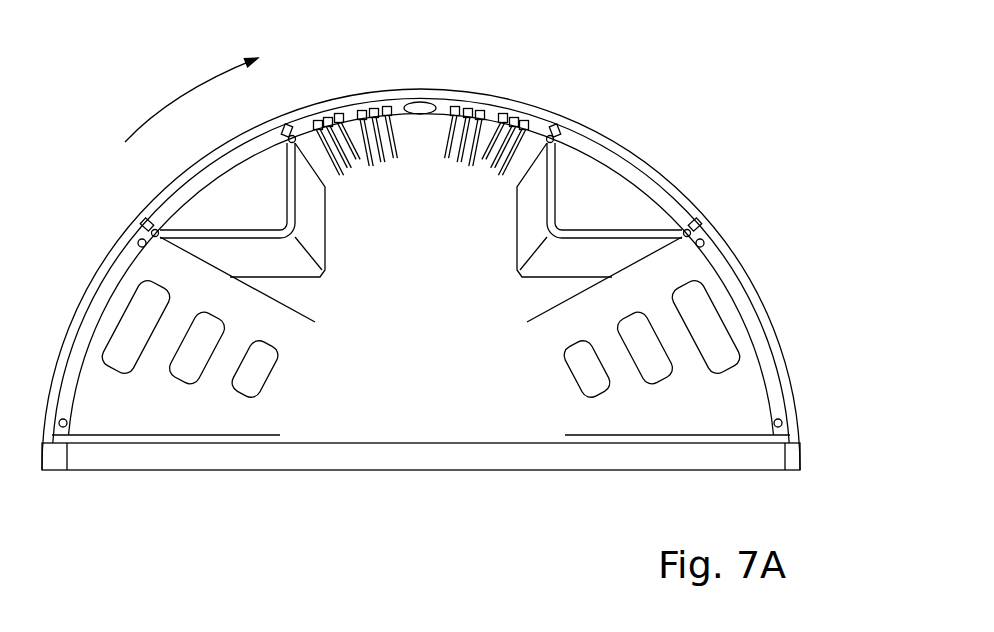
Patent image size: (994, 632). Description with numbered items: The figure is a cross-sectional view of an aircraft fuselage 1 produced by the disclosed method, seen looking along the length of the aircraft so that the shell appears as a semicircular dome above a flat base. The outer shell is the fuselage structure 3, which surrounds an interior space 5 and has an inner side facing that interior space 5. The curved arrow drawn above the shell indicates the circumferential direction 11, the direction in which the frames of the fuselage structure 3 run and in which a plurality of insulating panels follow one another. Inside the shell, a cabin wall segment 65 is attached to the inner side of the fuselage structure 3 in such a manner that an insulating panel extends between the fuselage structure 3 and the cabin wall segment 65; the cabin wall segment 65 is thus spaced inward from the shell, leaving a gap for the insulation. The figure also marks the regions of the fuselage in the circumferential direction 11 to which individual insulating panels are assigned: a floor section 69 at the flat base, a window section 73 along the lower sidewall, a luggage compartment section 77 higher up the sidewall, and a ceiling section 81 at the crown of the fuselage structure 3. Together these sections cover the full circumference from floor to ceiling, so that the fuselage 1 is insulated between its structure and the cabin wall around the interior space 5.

The aircraft fuselage 1 is at (103, 160).
The fuselage structure 3 is at (108, 262).
The interior space 5 is at (426, 304).
The circumferential direction 11 is at (180, 98).
The cabin wall segment 65 is at (187, 368).
The floor section 69 is at (810, 457).
The window section 73 is at (780, 318).
The luggage compartment section 77 is at (643, 150).
The ceiling section 81 is at (497, 92).